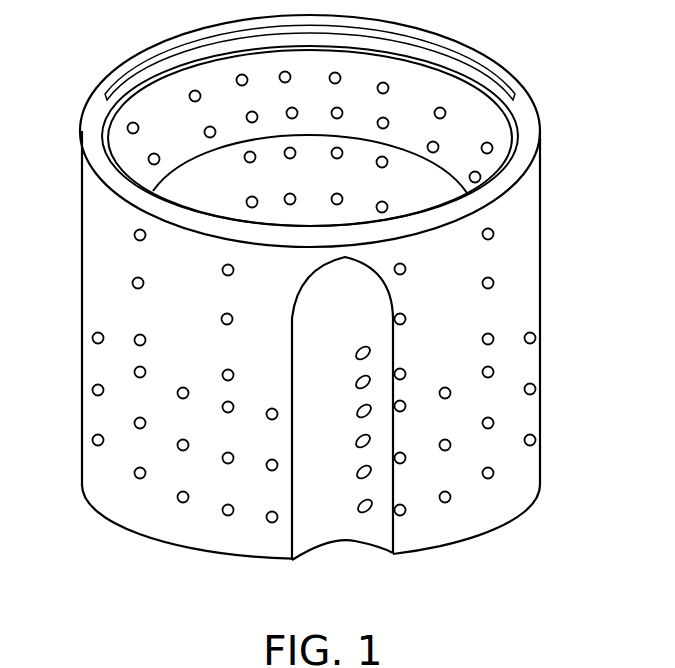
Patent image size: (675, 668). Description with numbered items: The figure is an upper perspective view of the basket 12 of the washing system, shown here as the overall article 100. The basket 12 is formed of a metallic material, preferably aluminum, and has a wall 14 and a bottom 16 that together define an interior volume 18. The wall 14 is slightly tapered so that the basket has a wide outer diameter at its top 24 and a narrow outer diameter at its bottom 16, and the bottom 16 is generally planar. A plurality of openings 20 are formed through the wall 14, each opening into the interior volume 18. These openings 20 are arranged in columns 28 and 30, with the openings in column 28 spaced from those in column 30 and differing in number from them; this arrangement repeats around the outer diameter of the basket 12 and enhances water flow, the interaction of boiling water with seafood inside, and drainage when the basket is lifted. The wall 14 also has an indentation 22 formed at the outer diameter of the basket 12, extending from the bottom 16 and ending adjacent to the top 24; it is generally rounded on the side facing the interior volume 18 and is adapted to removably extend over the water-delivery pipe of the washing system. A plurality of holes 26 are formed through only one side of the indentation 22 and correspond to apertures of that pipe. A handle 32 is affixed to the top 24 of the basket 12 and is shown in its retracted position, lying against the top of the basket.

The perforated drum assembly 100 is at (359, 308).
The basket 12 is at (542, 190).
The wall 14 is at (527, 365).
The bottom 16 is at (492, 518).
The interior volume 18 is at (428, 112).
The openings 20 is at (93, 389).
The indentation 22 is at (312, 515).
The top 24 is at (530, 120).
The holes 26 is at (365, 516).
The column 28 is at (131, 497).
The column 30 is at (168, 515).
The handle 32 is at (490, 62).